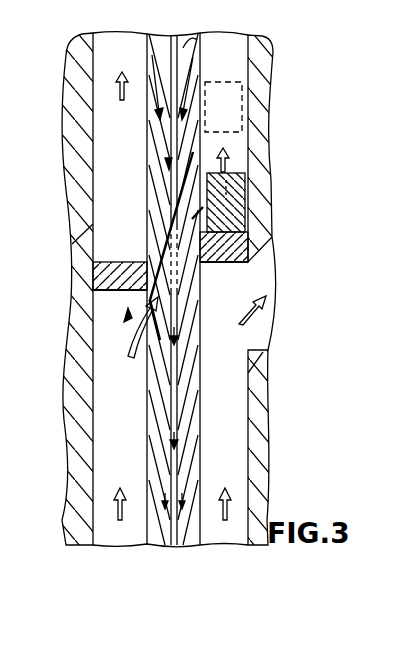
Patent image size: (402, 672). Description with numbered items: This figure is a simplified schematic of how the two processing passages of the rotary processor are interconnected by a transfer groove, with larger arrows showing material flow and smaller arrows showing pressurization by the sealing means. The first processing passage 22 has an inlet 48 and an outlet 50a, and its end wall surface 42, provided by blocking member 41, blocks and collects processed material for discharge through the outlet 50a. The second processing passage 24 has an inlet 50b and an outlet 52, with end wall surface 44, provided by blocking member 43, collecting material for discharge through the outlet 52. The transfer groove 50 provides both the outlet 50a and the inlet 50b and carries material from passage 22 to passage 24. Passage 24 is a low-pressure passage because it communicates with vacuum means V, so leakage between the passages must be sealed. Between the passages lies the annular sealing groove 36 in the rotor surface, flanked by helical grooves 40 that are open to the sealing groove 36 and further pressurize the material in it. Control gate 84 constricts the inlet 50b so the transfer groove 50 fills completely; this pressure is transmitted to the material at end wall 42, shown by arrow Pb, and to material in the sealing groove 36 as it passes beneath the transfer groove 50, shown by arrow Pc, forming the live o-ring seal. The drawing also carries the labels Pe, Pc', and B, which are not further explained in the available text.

The first processing passage 22 is at (120, 537).
The second processing passage 24 is at (235, 542).
The sealing groove 36 is at (172, 548).
The helical grooves 40 is at (156, 36).
The blocking member 41 is at (118, 270).
The end wall surface 42 is at (92, 311).
The blocking member 43 is at (248, 240).
The end wall surface 44 is at (235, 266).
The inlet 48 is at (93, 236).
The transfer groove 50 is at (163, 290).
The outlet 50a is at (133, 343).
The inlet 50b is at (202, 207).
The outlet 52 is at (246, 350).
The control gate 84 is at (247, 200).
The vacuum means V is at (242, 113).
The pressure Pe is at (152, 92).
The arrow Pc is at (141, 150).
The pressure Pc' is at (206, 346).
The arrow Pb is at (127, 328).
The point B is at (184, 248).